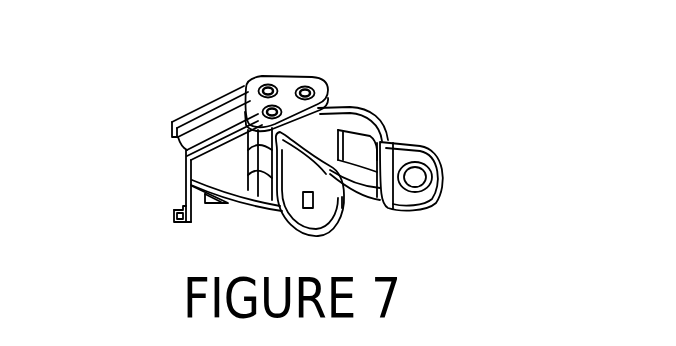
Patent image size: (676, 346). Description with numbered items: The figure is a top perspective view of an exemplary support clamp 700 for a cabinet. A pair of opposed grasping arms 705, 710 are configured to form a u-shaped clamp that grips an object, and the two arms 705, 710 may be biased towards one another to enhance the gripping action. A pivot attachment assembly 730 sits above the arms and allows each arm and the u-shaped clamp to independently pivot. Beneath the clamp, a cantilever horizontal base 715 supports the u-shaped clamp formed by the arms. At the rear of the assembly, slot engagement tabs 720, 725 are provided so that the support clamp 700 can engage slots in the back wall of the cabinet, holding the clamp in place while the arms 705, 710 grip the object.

The support clamp 700 is at (390, 110).
The grasping arm 705 is at (428, 147).
The grasping arm 710 is at (322, 208).
The cantilever horizontal base 715 is at (229, 184).
The slot engagement tab 720 is at (176, 218).
The slot engagement tab 725 is at (213, 103).
The pivot attachment assembly 730 is at (287, 97).